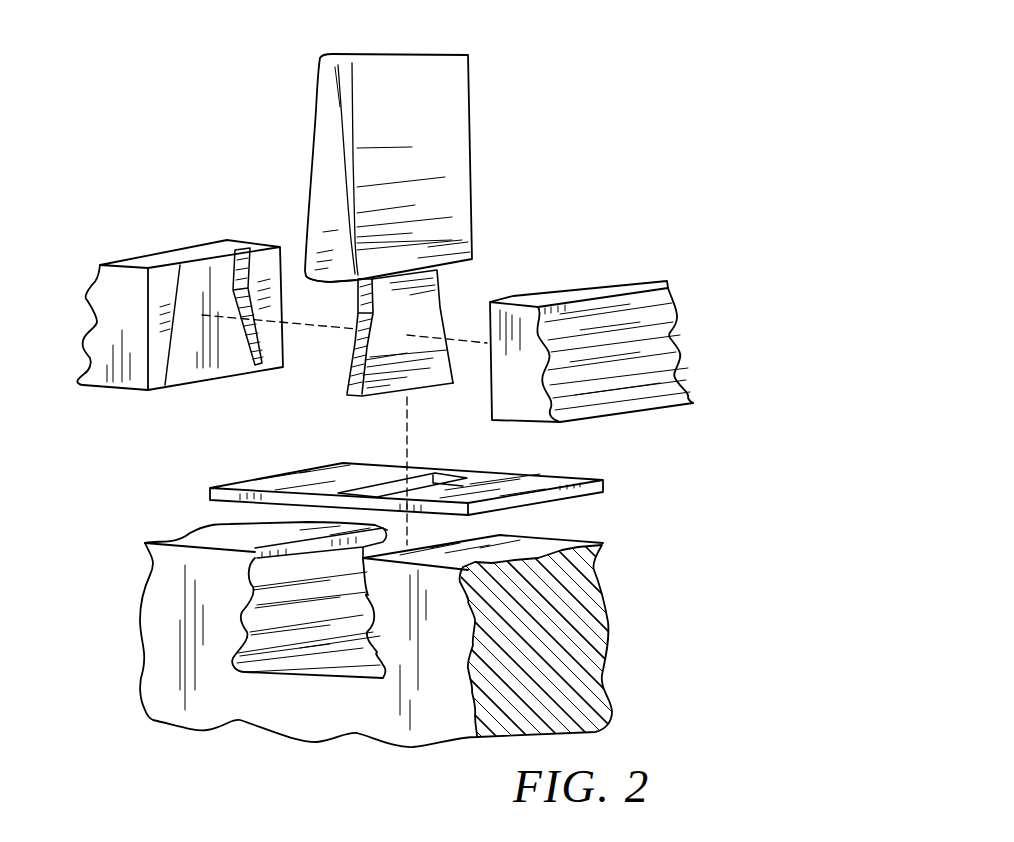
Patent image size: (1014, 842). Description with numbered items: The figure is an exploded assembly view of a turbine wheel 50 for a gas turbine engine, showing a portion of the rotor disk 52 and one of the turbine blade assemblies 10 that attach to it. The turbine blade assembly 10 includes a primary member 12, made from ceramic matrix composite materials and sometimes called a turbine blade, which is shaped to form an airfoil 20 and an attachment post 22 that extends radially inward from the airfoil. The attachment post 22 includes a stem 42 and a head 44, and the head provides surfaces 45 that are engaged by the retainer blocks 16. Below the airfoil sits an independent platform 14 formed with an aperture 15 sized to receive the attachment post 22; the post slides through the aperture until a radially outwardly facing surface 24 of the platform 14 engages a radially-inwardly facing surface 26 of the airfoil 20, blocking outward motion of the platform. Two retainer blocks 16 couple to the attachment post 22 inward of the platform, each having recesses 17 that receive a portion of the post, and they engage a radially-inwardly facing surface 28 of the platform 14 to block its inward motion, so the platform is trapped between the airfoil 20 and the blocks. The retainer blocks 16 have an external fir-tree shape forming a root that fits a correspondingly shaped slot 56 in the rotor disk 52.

The turbine blade assembly 10 is at (580, 151).
The primary member 12 is at (413, 422).
The platform 14 is at (377, 476).
The aperture 15 is at (420, 482).
The retainer blocks 16 is at (355, 356).
The recesses 17 is at (181, 352).
The airfoil 20 is at (327, 163).
The attachment post 22 is at (336, 365).
The radially outwardly facing surface 24 is at (510, 490).
The radially-inwardly facing surface 26 is at (322, 283).
The radially-inwardly facing surface 28 is at (247, 506).
The stem 42 is at (354, 290).
The head 44 is at (356, 362).
The surfaces 45 is at (352, 384).
The turbine wheel 50 is at (729, 153).
The rotor disk 52 is at (475, 656).
The slot 56 is at (292, 671).